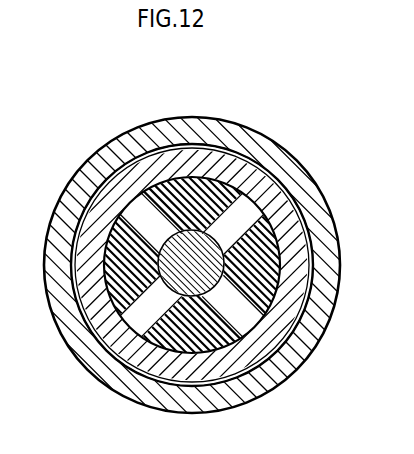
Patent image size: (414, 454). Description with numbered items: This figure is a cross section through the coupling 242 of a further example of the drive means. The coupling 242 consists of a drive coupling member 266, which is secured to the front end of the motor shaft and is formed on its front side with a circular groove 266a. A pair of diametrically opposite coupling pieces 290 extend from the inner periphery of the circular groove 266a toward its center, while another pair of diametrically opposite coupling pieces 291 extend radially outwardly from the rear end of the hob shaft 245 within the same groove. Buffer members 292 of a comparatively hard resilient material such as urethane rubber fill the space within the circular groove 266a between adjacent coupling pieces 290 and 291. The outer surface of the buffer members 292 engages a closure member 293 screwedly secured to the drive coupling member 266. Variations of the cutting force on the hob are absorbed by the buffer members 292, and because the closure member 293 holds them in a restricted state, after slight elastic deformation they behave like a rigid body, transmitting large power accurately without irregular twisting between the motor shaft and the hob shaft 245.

The coupling 242 is at (251, 107).
The closure member 293 is at (184, 132).
The coupling pieces 290 is at (78, 184).
The drive coupling member 266 is at (133, 210).
The circular groove 266a is at (163, 183).
The coupling pieces 291 is at (242, 201).
The buffer members 292 is at (272, 240).
The hob shaft 245 is at (207, 248).